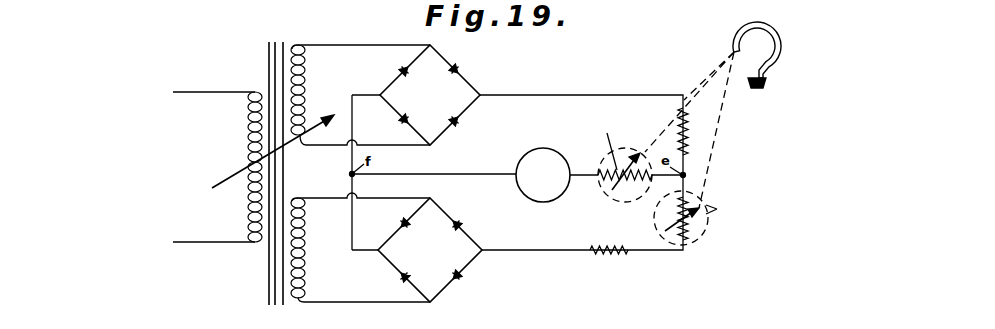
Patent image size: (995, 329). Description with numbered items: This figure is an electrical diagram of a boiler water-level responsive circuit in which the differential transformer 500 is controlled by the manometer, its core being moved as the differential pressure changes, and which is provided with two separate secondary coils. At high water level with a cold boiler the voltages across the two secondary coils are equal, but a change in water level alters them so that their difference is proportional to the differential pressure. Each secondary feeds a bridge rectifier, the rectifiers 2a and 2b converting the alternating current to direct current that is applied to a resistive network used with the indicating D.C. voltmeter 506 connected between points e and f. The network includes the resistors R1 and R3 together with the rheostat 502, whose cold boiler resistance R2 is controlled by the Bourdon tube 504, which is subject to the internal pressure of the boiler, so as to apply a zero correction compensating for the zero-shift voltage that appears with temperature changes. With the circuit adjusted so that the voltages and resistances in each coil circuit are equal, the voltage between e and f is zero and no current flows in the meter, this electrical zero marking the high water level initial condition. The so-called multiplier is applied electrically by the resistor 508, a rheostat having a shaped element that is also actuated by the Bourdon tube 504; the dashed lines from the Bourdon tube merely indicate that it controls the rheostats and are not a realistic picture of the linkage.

The differential transformer 500 is at (308, 40).
The rectifier 2a is at (430, 95).
The rectifier 2b is at (430, 250).
The indicating D.C. voltmeter 506 is at (533, 200).
The resistor 508 is at (623, 202).
The rheostat 502 is at (702, 235).
The Bourdon tube 504 is at (782, 50).
The resistor R1 is at (693, 131).
The cold boiler resistance of the rheostat R2 is at (693, 231).
The resistor R3 is at (609, 265).